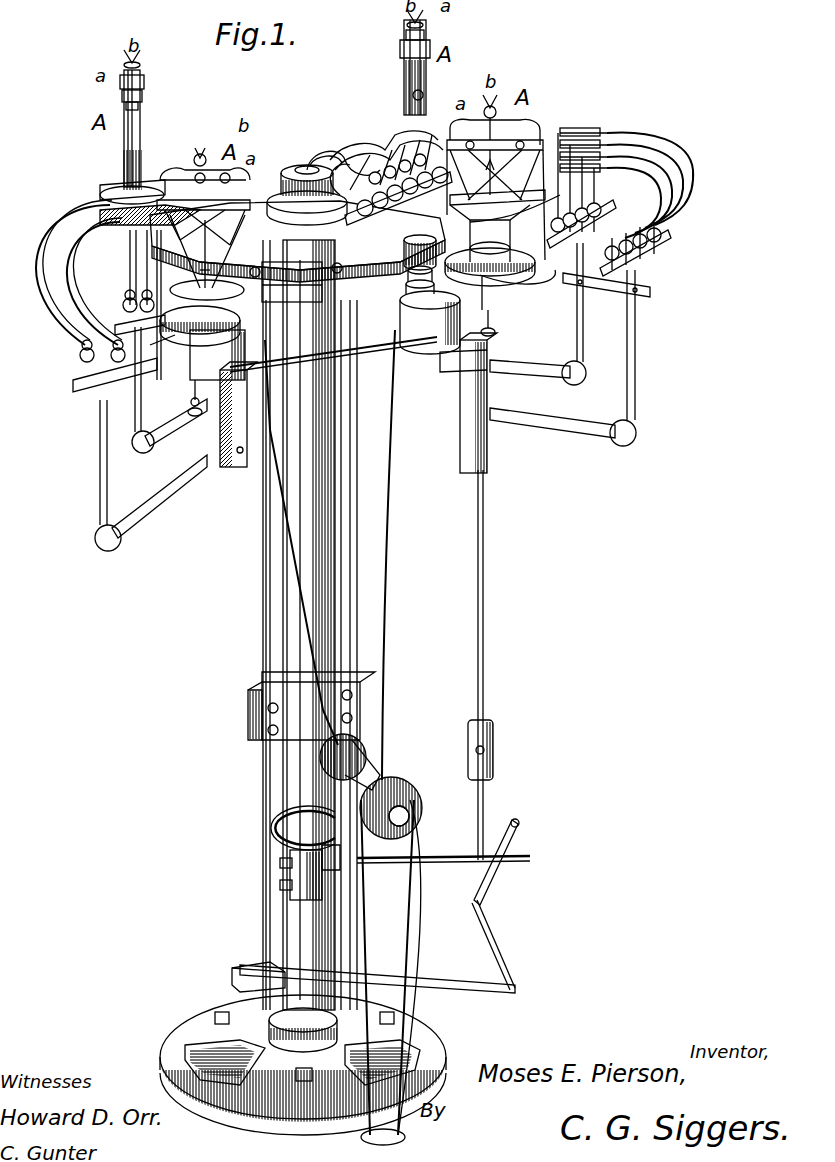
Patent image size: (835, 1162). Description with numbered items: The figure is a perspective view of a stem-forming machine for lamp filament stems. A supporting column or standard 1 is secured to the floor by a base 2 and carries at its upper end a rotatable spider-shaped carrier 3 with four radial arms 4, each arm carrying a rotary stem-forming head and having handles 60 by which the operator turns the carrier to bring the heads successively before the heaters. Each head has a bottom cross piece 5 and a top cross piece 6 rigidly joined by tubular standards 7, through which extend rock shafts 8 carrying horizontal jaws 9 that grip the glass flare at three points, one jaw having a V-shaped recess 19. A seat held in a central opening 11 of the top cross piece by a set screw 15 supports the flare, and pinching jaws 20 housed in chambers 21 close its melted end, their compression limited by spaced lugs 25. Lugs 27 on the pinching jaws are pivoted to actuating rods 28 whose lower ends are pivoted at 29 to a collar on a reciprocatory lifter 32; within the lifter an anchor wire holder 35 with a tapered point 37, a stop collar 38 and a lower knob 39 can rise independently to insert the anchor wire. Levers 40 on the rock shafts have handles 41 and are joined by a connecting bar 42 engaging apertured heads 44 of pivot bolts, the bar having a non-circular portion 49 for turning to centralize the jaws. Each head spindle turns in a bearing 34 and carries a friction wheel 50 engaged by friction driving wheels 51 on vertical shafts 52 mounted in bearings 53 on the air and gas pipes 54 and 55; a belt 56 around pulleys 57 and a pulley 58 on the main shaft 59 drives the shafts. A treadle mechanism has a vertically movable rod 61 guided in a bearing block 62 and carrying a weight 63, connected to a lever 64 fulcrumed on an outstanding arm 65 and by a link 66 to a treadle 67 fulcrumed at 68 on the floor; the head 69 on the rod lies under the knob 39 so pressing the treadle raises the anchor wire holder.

The supporting column or standard 1 is at (295, 625).
The base 2 is at (200, 1030).
The spider-shaped frame or carrier 3 is at (282, 200).
The radial arms 4 is at (345, 170).
The base member or cross piece 5 is at (515, 204).
The top member or cross piece 6 is at (547, 195).
The tubular standards 7 is at (165, 128).
The rock shafts 8 is at (404, 50).
The horizontal jaws 9 is at (405, 35).
The opening 11 is at (500, 125).
The set screw 15 is at (492, 172).
The V-shaped recess 19 is at (145, 92).
The pinching jaws 20 is at (140, 105).
The chambers 21 is at (542, 128).
The spaced lugs 25 is at (361, 199).
The lugs 27 is at (76, 265).
The actuating rods 28 is at (305, 155).
The pivots 29 is at (525, 280).
The lifter 32 is at (332, 305).
The bearing 34 is at (150, 215).
The anchor wire holder 35 is at (192, 388).
The point 37 is at (128, 285).
The stop collar 38 is at (391, 178).
The head or knob 39 is at (190, 410).
The levers 40 is at (410, 256).
The handles 41 is at (600, 193).
The connecting bar 42 is at (296, 286).
The apertured heads 44 is at (408, 276).
The non-circular portion 49 is at (530, 280).
The friction wheel 50 is at (250, 360).
The friction driving wheels 51 is at (406, 290).
The vertical shafts 52 is at (408, 306).
The bearings 53 is at (215, 455).
The air and gas pipe 54 is at (565, 435).
The air and gas pipe 55 is at (545, 380).
The belt 56 is at (385, 555).
The pulleys 57 is at (412, 320).
The pulley 58 is at (370, 740).
The main shaft 59 is at (410, 835).
The handles 60 is at (80, 358).
The vertically-movable rod 61 is at (487, 655).
The bearing block 62 is at (490, 455).
The weight 63 is at (495, 737).
The lever 64 is at (520, 855).
The outstanding arm 65 is at (445, 862).
The link 66 is at (505, 965).
The treadle 67 is at (462, 985).
The fulcrum 68 is at (240, 983).
The head 69 is at (500, 350).